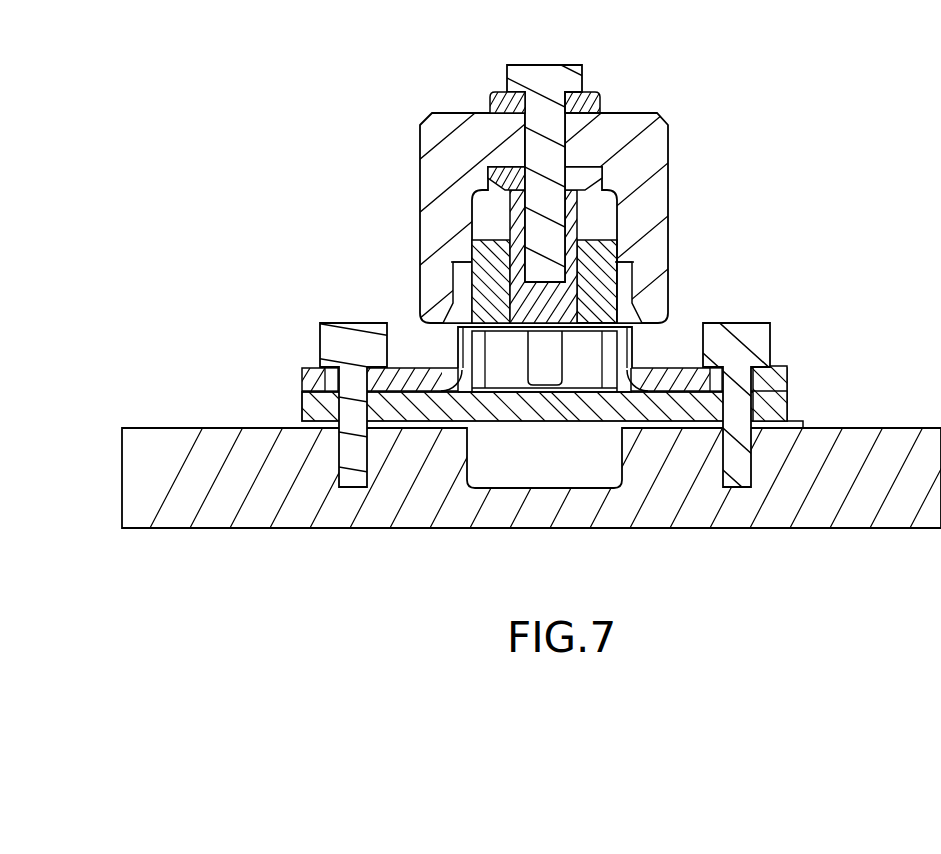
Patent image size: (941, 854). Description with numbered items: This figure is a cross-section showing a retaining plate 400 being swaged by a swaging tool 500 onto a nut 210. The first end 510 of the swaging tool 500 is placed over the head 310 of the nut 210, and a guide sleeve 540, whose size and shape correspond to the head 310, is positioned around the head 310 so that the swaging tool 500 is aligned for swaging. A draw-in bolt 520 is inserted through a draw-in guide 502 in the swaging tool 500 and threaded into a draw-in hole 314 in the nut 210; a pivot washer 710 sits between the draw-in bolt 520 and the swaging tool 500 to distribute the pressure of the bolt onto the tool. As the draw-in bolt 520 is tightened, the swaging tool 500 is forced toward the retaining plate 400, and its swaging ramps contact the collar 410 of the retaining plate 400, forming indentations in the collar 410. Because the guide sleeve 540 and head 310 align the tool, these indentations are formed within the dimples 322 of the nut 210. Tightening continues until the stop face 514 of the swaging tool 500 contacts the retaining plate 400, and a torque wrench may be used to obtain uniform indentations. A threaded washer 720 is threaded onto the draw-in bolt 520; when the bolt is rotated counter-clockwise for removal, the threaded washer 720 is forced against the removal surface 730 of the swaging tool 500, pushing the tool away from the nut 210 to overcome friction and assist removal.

The nut 210 is at (620, 245).
The head 310 is at (612, 222).
The draw-in hole 314 is at (522, 250).
The dimples 322 is at (607, 370).
The retaining plate 400 is at (787, 373).
The collar 410 is at (458, 342).
The swaging tool 500 is at (668, 130).
The draw-in guide 502 is at (613, 113).
The first end 510 is at (690, 308).
The stop face 514 is at (620, 325).
The draw-in bolt 520 is at (582, 74).
The guide sleeve 540 is at (472, 230).
The pivot washer 710 is at (490, 99).
The threaded washer 720 is at (600, 182).
The removal surface 730 is at (500, 166).